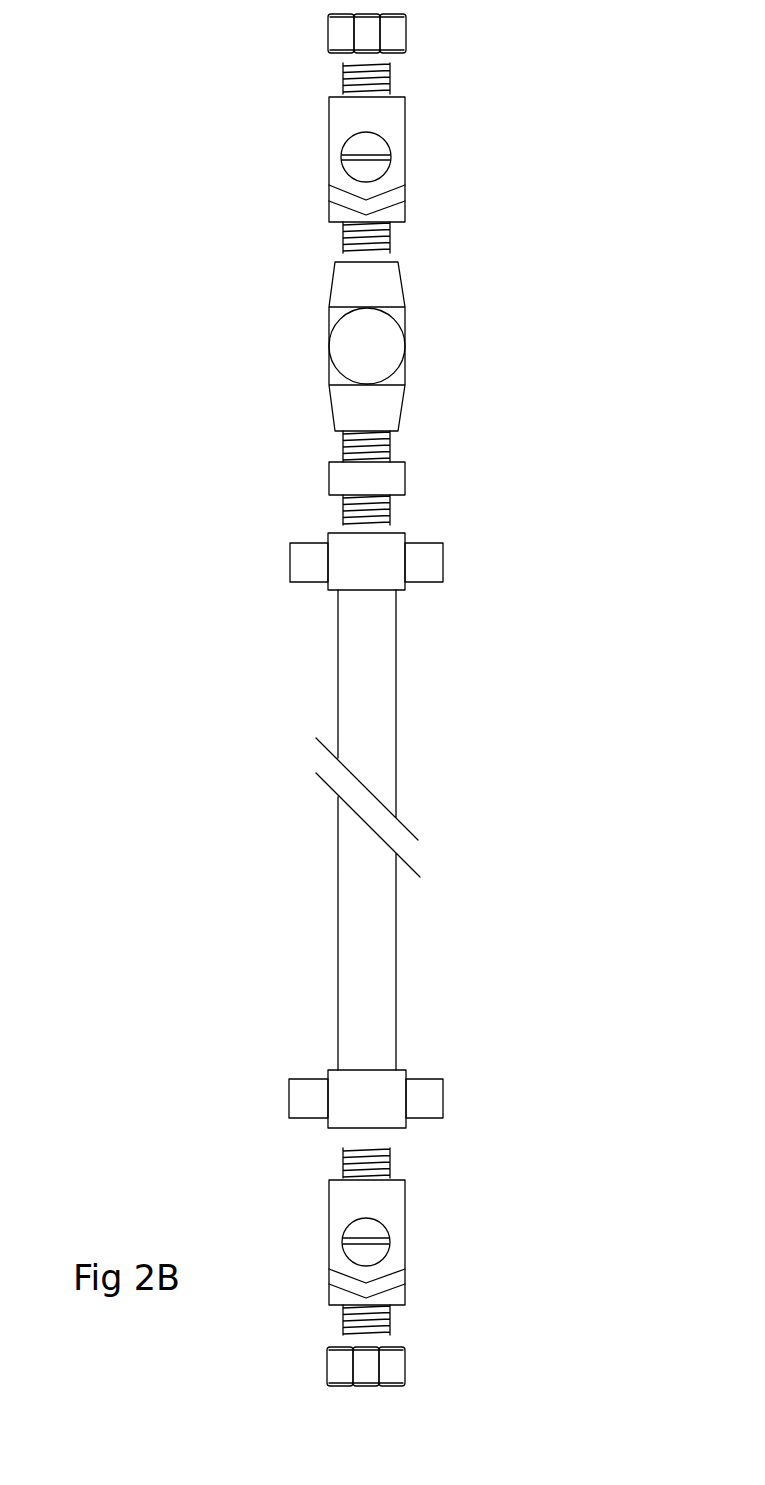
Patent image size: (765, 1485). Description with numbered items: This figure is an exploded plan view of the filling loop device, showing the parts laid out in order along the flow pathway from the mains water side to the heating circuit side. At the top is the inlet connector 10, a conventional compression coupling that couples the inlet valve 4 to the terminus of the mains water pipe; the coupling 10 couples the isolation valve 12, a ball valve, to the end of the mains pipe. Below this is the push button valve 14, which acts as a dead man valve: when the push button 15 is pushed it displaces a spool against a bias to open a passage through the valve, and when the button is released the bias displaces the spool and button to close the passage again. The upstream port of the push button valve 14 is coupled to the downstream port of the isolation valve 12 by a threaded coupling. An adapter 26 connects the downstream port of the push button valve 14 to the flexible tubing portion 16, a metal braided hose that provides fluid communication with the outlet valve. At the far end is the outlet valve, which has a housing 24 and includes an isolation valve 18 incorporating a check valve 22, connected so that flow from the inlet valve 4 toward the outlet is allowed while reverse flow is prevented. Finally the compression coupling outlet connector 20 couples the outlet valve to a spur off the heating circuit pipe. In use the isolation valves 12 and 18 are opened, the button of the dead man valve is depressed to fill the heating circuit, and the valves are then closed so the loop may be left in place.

The inlet connector 10 is at (406, 42).
The isolation valve 12 is at (387, 143).
The inlet valve 4 is at (405, 167).
The push button 15 is at (395, 323).
The push button valve 14 is at (406, 358).
The adapter 26 is at (405, 470).
The flexible tubing portion 16 is at (396, 987).
The isolation valve 18 is at (378, 1216).
The housing 24 is at (405, 1232).
The check valve 22 is at (405, 1267).
The outlet connector 20 is at (405, 1348).